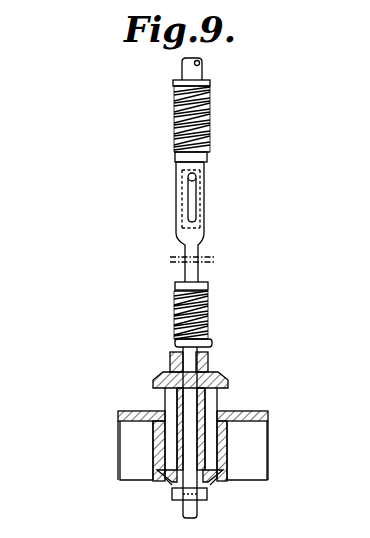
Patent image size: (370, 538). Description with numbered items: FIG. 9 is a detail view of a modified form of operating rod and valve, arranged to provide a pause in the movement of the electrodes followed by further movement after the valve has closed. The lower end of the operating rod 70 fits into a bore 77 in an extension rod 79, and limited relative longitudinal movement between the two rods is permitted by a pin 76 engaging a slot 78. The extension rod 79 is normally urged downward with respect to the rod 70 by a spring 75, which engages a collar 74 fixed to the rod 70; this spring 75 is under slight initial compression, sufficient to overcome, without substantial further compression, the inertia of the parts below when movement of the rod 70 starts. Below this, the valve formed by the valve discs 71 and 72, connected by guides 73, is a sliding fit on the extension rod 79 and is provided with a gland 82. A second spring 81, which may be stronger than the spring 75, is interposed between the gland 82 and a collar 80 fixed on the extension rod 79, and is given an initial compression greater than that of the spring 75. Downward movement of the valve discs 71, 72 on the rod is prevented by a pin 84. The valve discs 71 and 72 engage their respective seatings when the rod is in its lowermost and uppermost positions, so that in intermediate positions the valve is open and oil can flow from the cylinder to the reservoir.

The operating rod 70 is at (200, 68).
The collar 74 is at (175, 82).
The spring 75 is at (211, 132).
The pin 76 is at (196, 178).
The bore 77 is at (201, 206).
The slot 78 is at (194, 215).
The extension rod 79 is at (180, 228).
The collar 80 is at (177, 285).
The spring 81 is at (176, 310).
The gland 82 is at (177, 346).
The valve disc 71 is at (224, 379).
The guides 73 is at (210, 397).
The valve disc 72 is at (213, 481).
The pin 84 is at (178, 497).